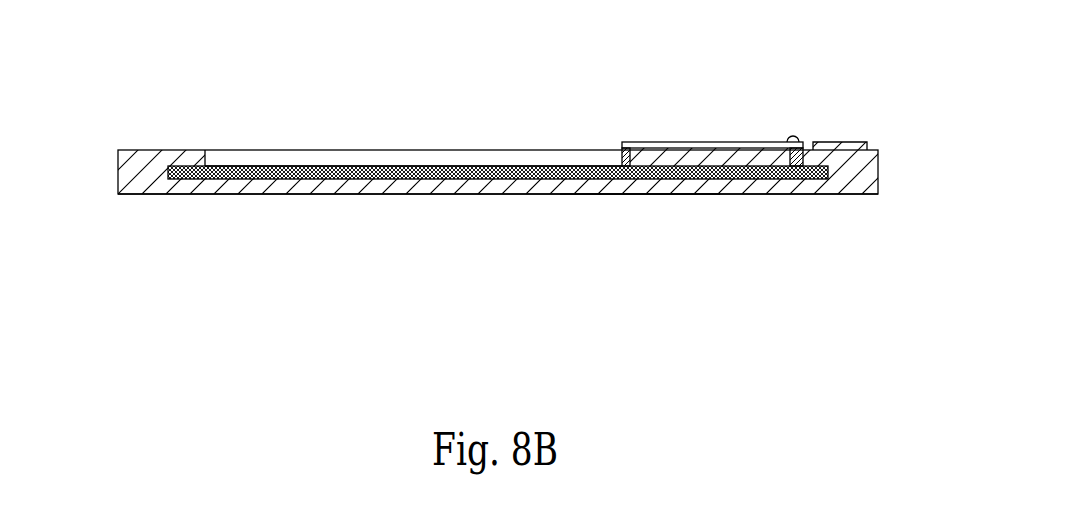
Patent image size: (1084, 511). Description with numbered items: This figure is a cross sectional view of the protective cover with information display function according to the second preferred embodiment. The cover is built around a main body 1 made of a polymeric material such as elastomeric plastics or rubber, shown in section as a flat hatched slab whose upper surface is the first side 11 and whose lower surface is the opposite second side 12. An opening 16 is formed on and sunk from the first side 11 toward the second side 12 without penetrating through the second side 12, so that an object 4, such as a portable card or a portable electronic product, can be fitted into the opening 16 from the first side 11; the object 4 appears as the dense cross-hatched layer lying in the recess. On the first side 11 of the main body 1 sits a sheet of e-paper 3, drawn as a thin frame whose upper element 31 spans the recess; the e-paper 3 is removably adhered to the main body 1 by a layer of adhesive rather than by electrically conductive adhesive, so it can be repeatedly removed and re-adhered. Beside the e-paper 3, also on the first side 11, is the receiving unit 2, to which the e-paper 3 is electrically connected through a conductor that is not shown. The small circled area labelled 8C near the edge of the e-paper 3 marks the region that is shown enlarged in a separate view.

The main body 1 is at (157, 119).
The first side 11 is at (181, 149).
The opening 16 is at (341, 153).
The object 4 is at (303, 195).
The second side 12 is at (640, 195).
The e-paper 3 is at (630, 143).
The cover plate 31 is at (660, 143).
The protrusion 8C is at (781, 139).
The receiving unit 2 is at (838, 147).